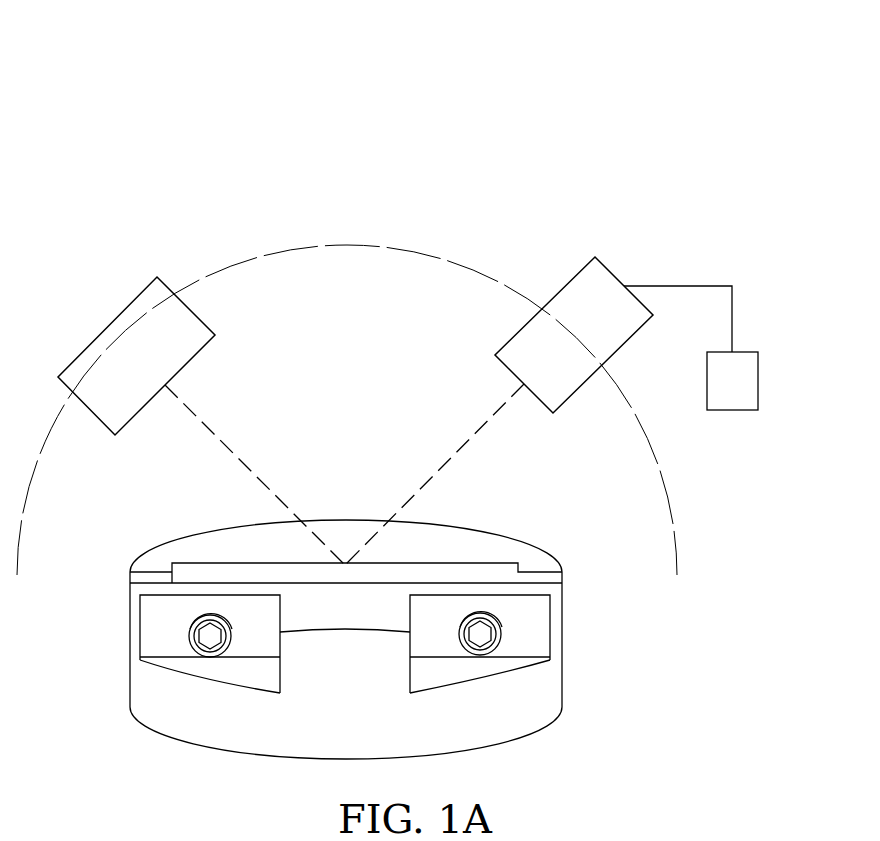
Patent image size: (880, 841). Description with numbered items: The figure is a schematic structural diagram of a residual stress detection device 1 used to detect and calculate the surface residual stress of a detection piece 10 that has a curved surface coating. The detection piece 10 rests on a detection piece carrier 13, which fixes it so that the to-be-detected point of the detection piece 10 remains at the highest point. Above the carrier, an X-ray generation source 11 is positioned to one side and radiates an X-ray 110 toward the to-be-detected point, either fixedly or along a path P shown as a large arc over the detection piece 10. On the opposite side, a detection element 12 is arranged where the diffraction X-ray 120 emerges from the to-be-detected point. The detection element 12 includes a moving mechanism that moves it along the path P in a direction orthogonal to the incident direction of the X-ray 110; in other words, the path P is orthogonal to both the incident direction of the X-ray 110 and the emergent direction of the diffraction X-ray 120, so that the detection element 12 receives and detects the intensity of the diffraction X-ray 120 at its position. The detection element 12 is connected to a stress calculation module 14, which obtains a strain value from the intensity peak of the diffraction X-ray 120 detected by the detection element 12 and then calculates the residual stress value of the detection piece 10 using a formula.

The residual stress detection device 1 is at (166, 127).
The path P is at (453, 262).
The X-ray generation source 11 is at (83, 348).
The detection element 12 is at (618, 273).
The stress calculation module 14 is at (738, 412).
The X-ray 110 is at (265, 478).
The diffraction X-ray 120 is at (427, 483).
The detection piece 10 is at (473, 572).
The detection piece carrier 13 is at (138, 700).